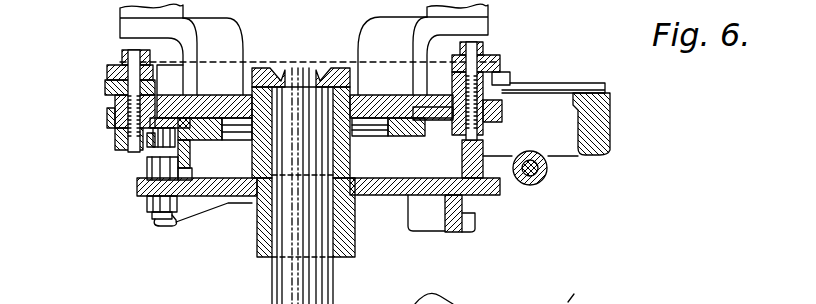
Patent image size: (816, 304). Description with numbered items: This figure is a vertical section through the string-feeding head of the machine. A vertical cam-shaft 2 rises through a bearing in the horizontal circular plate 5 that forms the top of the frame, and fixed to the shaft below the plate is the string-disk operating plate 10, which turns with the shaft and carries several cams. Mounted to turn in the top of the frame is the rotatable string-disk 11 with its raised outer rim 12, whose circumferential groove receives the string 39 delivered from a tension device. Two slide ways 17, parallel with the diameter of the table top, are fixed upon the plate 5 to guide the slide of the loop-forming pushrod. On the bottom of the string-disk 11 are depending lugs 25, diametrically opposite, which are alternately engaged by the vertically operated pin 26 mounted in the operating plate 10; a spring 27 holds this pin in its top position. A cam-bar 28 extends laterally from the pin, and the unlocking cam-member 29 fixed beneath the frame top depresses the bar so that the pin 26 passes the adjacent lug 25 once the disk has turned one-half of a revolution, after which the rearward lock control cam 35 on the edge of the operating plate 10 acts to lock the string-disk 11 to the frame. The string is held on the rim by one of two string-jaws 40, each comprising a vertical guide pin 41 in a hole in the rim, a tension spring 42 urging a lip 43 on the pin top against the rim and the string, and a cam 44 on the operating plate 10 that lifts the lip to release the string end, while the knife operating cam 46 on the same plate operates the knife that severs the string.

The vertical cam-shaft 2 is at (322, 284).
The horizontal circular plate 5 is at (383, 96).
The string-disk operating plate 10 is at (375, 178).
The rotatable string-disk 11 is at (116, 136).
The raised outer rim 12 is at (181, 49).
The slide ways 17 is at (262, 68).
The depending lugs 25 is at (152, 156).
The vertically operated pin 26 is at (148, 160).
The spring 27 is at (176, 224).
The cam-bar 28 is at (192, 173).
The unlocking cam-member 29 is at (235, 139).
The rearward lock control cam 35 is at (502, 191).
The string 39 is at (105, 86).
The string-jaws 40 is at (105, 73).
The vertical guide pin 41 is at (115, 96).
The tension spring 42 is at (107, 117).
The lip 43 is at (120, 68).
The cam 44 is at (462, 157).
The knife operating cam 46 is at (468, 226).